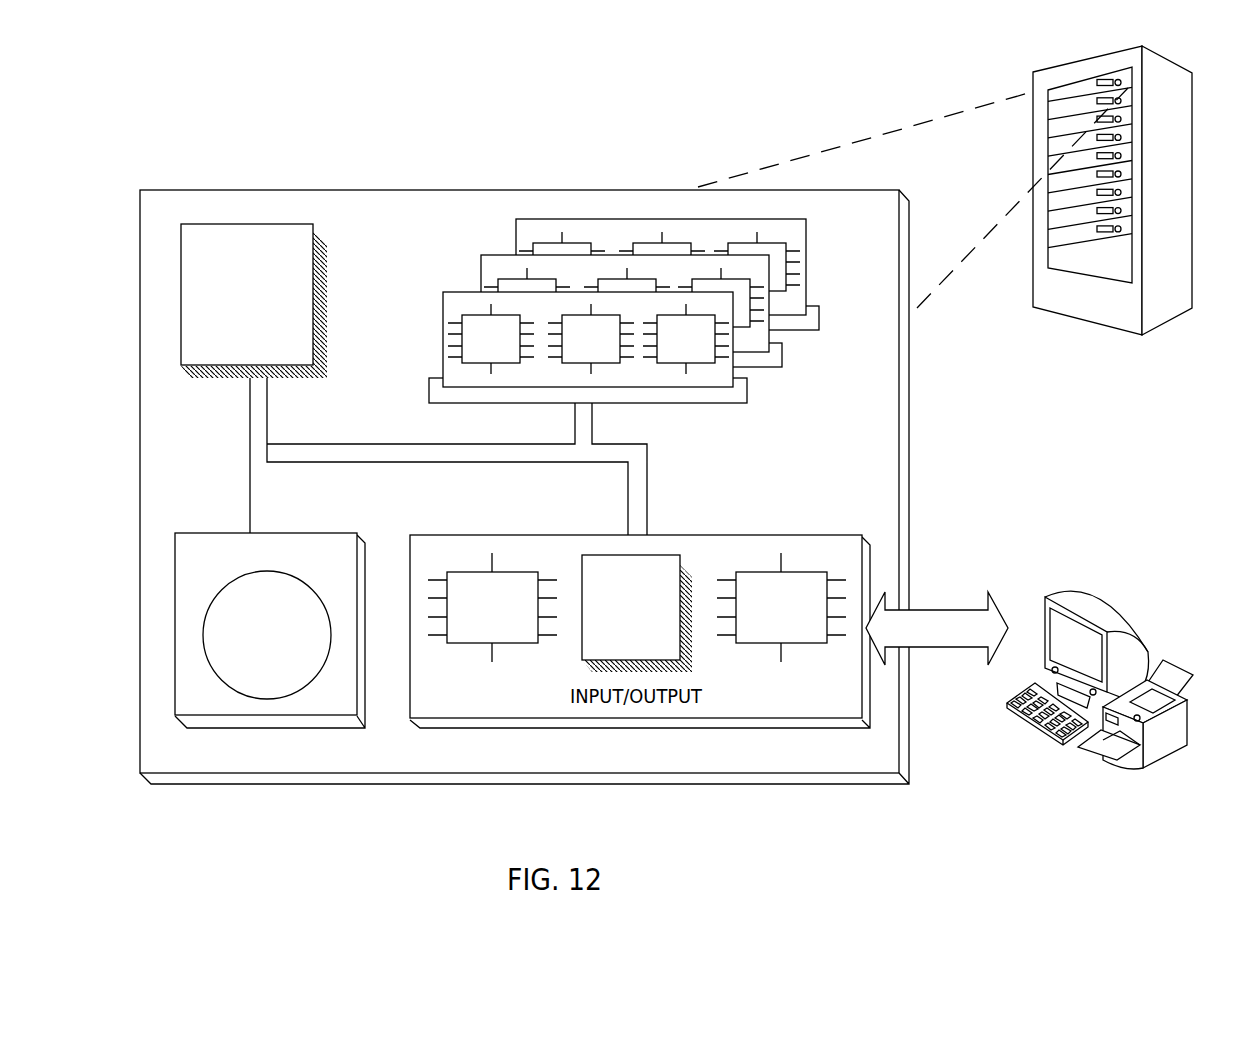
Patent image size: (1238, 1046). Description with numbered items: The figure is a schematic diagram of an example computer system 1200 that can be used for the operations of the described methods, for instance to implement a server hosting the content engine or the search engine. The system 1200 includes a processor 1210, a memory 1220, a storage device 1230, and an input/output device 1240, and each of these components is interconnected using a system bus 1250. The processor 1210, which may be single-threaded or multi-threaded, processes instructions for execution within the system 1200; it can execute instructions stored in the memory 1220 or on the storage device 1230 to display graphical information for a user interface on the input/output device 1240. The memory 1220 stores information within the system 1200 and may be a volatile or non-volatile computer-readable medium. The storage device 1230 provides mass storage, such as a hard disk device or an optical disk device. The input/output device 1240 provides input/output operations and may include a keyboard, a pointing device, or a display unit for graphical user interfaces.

The computer system 1200 is at (266, 109).
The processor 1210 is at (303, 355).
The memory 1220 is at (815, 373).
The storage device 1230 is at (346, 707).
The input/output device 1240 is at (1043, 600).
The system bus 1250 is at (443, 462).